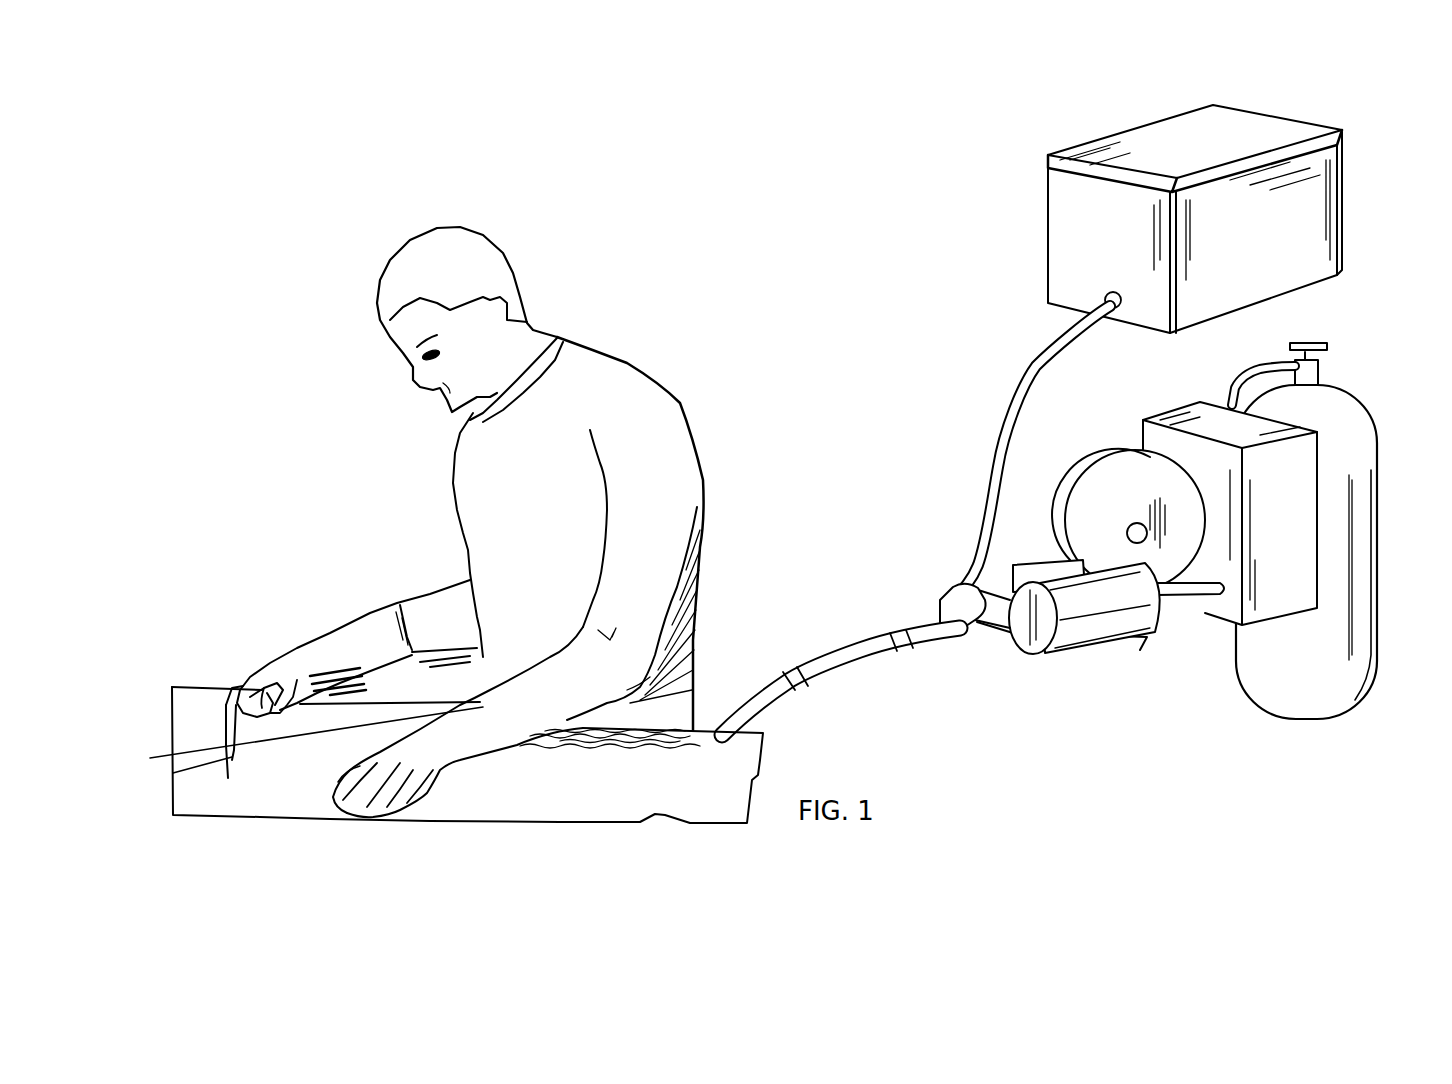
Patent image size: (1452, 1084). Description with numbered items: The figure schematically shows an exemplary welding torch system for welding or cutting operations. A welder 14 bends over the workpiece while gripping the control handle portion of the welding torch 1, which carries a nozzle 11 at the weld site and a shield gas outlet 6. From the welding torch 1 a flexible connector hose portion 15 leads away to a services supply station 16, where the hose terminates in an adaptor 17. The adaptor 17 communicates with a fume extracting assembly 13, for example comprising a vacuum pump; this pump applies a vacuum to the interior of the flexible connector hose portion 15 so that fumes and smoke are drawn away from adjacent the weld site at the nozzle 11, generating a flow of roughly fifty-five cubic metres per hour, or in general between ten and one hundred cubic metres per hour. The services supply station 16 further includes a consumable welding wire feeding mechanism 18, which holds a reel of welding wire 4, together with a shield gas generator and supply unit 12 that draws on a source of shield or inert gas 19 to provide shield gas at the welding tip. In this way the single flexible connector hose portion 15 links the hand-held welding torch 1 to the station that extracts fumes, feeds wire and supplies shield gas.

The welding torch 1 is at (230, 686).
The reel of welding wire 4 is at (229, 780).
The shield gas outlet 6 is at (307, 743).
The nozzle 11 is at (233, 727).
The shield gas generator and supply unit 12 is at (1215, 657).
The fume extracting assembly 13 is at (1052, 221).
The welder 14 is at (662, 414).
The flexible connector hose portion 15 is at (833, 653).
The services supply station 16 is at (944, 405).
The adaptor 17 is at (935, 645).
The consumable welding wire feeding mechanism 18 is at (1083, 476).
The source of shield or inert gas 19 is at (1373, 560).